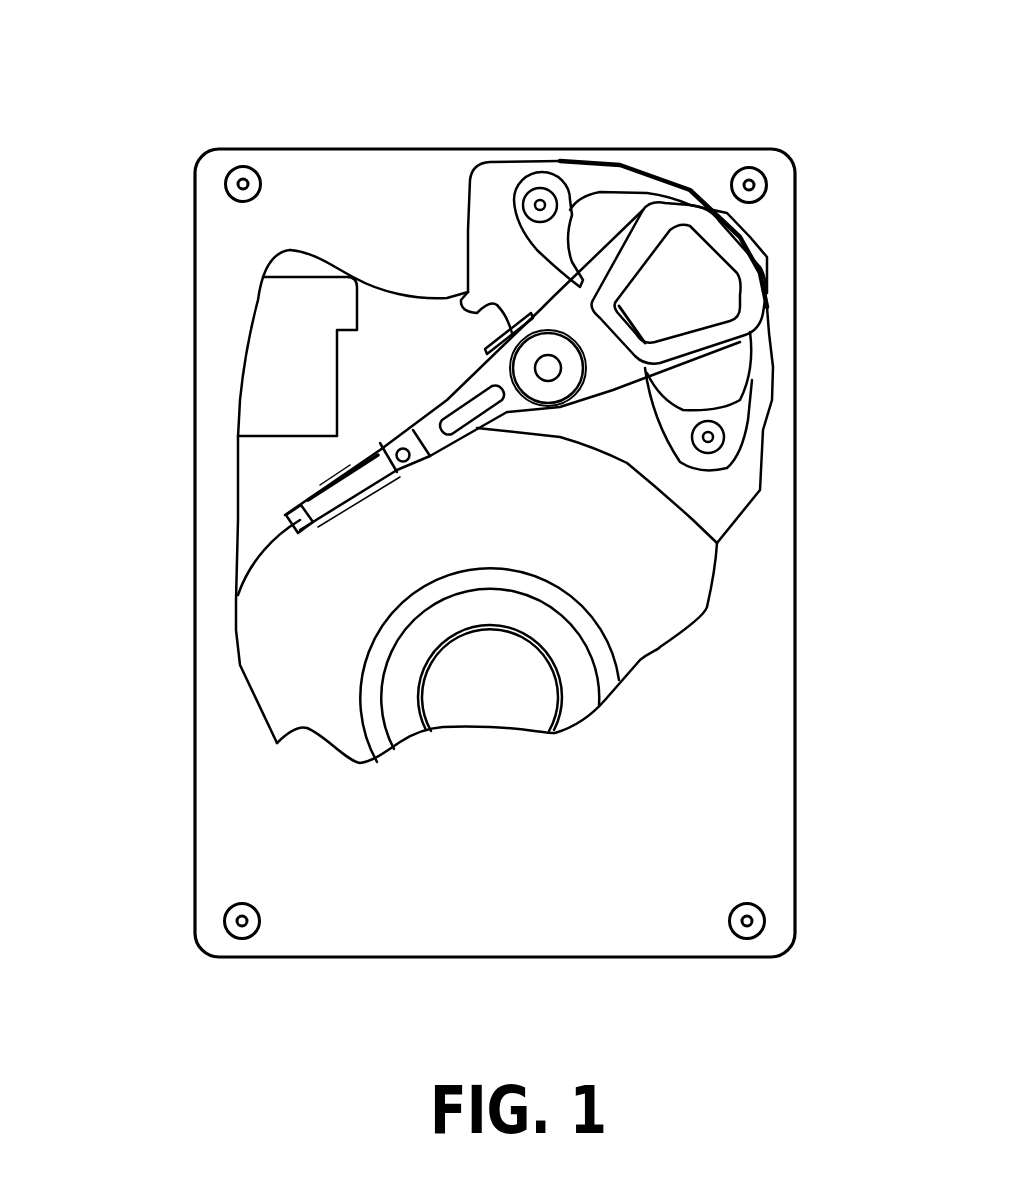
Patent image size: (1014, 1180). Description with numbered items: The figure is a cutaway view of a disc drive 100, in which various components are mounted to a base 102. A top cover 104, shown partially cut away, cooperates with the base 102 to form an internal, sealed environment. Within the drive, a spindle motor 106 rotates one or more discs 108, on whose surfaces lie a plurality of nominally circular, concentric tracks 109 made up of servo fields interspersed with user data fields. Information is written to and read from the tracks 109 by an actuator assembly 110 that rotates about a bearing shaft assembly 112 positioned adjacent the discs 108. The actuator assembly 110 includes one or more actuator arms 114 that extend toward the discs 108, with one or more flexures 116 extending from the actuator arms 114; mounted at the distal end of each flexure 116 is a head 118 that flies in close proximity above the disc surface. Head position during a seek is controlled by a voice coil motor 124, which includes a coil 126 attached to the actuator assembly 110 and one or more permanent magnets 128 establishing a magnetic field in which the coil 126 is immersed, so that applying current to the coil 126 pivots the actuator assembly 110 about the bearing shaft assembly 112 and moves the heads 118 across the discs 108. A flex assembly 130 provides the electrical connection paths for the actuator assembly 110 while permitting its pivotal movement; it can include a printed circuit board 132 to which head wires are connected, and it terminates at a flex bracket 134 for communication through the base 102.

The disc drive 100 is at (238, 100).
The base 102 is at (267, 497).
The top cover 104 is at (245, 797).
The spindle motor 106 is at (492, 702).
The discs 108 is at (662, 610).
The tracks 109 is at (378, 692).
The actuator assembly 110 is at (532, 446).
The bearing shaft assembly 112 is at (563, 380).
The actuator arms 114 is at (480, 430).
The flexures 116 is at (348, 490).
The head 118 is at (296, 532).
The voice coil motor 124 is at (583, 155).
The coil 126 is at (742, 280).
The permanent magnets 128 is at (583, 233).
The flex assembly 130 is at (462, 367).
The printed circuit board 132 is at (457, 297).
The flex bracket 134 is at (283, 368).